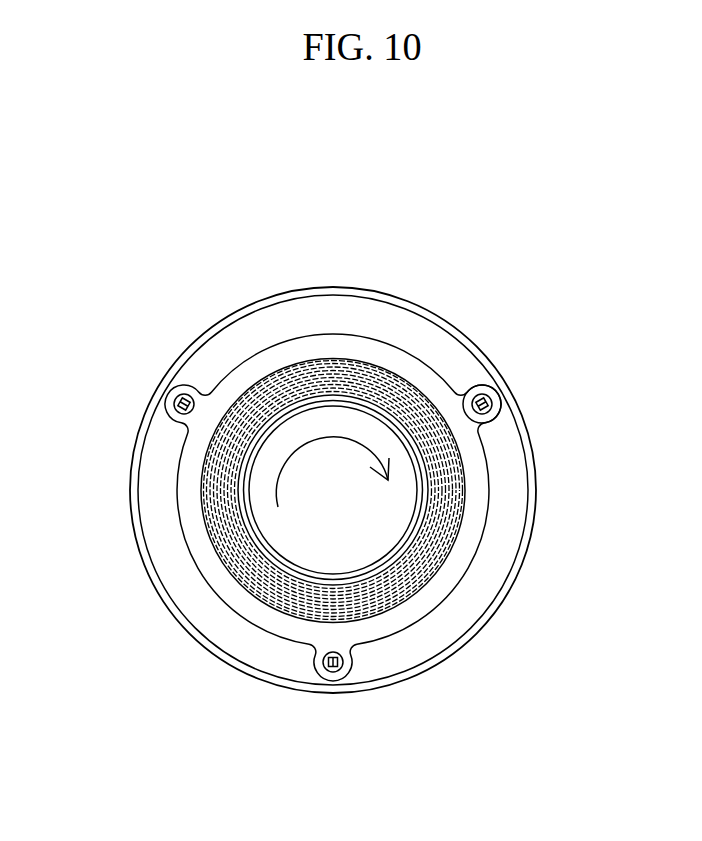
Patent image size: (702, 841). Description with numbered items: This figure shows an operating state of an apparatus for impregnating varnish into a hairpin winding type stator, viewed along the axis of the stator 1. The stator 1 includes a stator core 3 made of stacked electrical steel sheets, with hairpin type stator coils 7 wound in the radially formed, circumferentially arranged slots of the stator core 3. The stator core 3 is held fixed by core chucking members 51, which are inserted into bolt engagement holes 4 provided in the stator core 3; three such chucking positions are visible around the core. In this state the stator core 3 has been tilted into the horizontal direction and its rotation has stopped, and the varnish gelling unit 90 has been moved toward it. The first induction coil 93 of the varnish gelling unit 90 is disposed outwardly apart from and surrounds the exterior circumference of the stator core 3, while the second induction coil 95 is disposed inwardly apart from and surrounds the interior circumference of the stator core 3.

The stator 1 is at (258, 631).
The stator core 3 is at (403, 350).
The bolt engagement holes 4 is at (492, 401).
The hairpin type stator coils 7 is at (275, 380).
The core chucking members 51 is at (493, 368).
The varnish gelling unit 90 is at (173, 630).
The first induction coil 93 is at (128, 495).
The second induction coil 95 is at (252, 542).